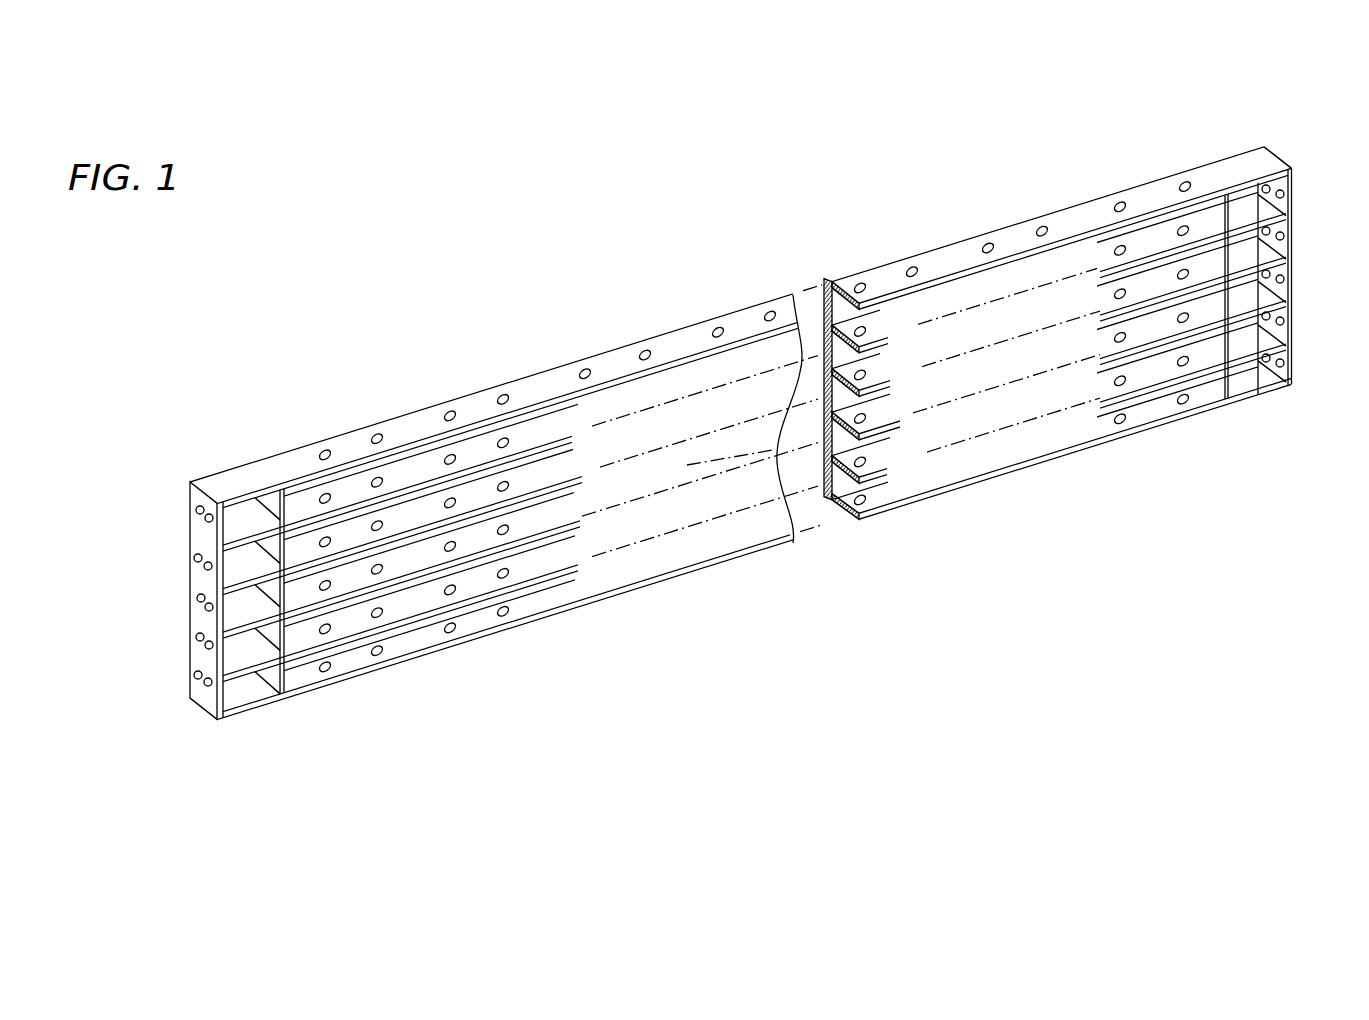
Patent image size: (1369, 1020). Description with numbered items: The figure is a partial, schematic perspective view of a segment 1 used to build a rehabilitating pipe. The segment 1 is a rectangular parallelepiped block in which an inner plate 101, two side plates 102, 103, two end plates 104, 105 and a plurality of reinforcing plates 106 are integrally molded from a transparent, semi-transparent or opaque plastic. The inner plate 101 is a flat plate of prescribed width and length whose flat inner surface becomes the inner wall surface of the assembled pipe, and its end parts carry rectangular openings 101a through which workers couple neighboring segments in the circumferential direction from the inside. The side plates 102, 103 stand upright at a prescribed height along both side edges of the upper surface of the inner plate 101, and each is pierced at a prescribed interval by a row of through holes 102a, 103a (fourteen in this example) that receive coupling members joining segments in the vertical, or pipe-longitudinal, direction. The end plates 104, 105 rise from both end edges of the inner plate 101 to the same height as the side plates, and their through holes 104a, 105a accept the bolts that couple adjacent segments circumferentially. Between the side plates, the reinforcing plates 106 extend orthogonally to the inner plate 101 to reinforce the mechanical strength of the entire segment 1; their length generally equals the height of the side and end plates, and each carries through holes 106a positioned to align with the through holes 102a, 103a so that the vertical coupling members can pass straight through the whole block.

The segment 1 is at (578, 341).
The inner plate 101 is at (838, 310).
The rectangular opening 101a is at (242, 672).
The side plate 102 is at (397, 428).
The through hole 102a is at (503, 396).
The side plate 103 is at (357, 662).
The through hole 103a is at (450, 633).
The end plate 104 is at (203, 497).
The through hole 104a is at (198, 558).
The end plate 105 is at (1291, 168).
The through hole 105a is at (1282, 323).
The reinforcing plate 106 is at (358, 525).
The through hole 106a is at (500, 572).